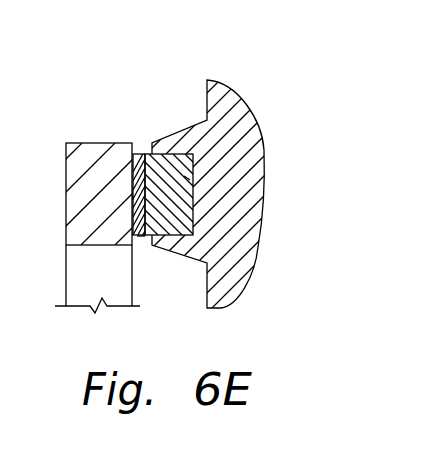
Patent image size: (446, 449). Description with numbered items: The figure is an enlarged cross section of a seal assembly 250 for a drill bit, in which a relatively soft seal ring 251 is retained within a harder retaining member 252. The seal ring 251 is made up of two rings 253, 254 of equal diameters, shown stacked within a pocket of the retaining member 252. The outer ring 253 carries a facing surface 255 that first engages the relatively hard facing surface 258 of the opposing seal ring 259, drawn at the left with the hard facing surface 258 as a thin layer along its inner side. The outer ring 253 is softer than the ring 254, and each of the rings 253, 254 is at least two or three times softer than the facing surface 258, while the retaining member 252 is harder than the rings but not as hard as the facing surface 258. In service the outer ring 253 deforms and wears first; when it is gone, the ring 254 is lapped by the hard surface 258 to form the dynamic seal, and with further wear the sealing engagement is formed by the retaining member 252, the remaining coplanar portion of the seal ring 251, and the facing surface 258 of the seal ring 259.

The seal assembly 250 is at (173, 60).
The relatively soft seal ring 251 is at (180, 218).
The retaining member 252 is at (248, 243).
The outer ring 253 is at (137, 240).
The ring 254 is at (187, 178).
The facing surface 255 is at (133, 198).
The relatively hard facing surface 258 is at (135, 152).
The opposing seal ring 259 is at (82, 151).